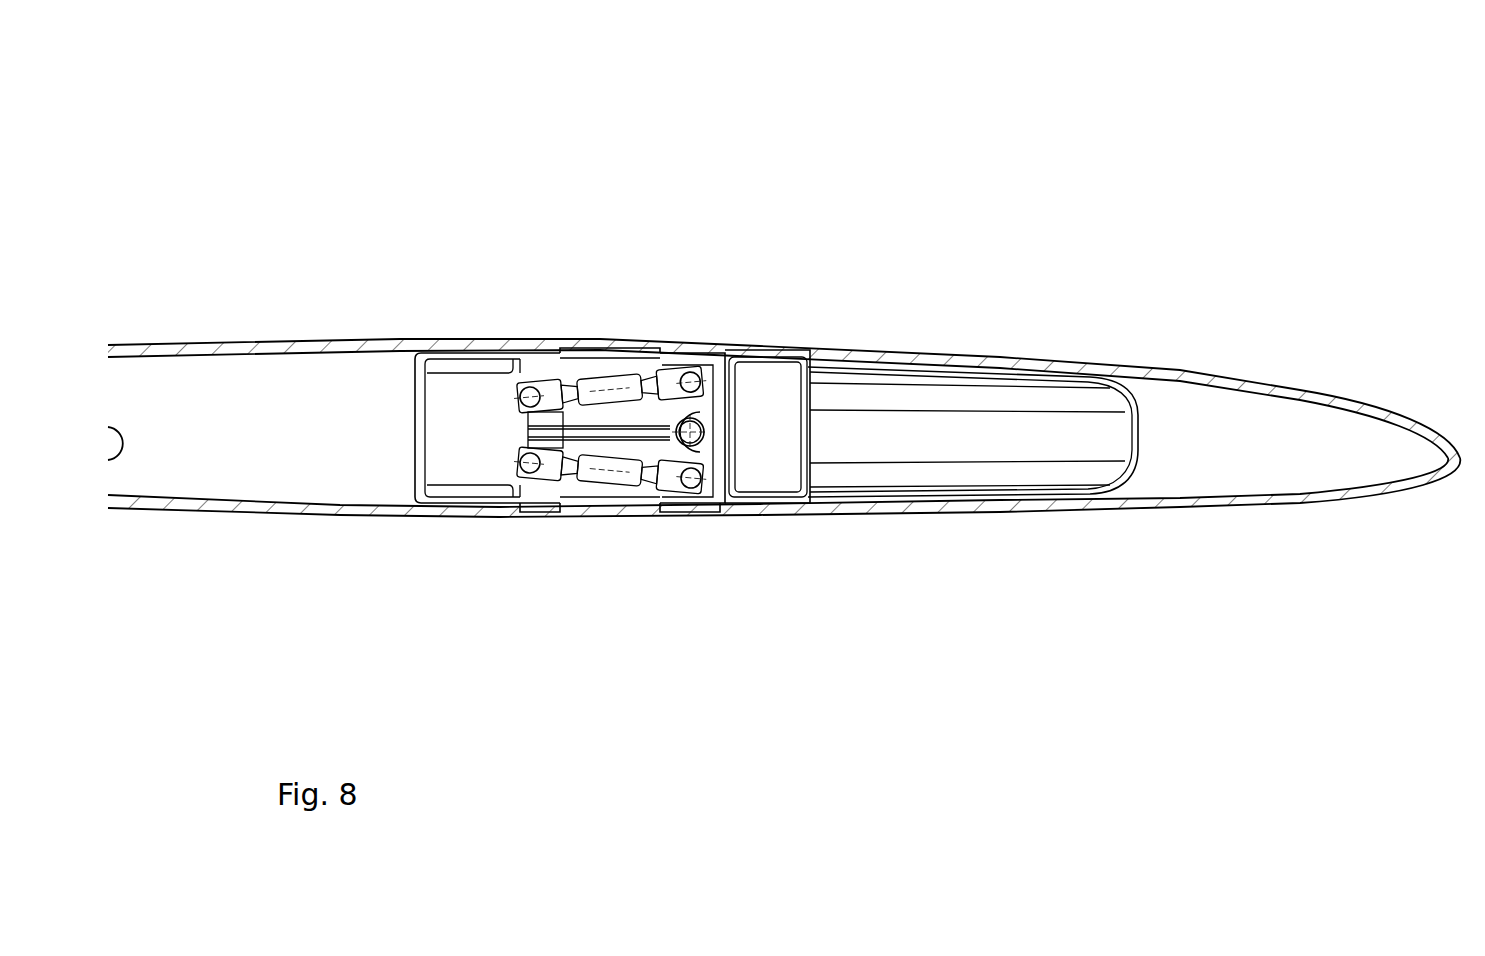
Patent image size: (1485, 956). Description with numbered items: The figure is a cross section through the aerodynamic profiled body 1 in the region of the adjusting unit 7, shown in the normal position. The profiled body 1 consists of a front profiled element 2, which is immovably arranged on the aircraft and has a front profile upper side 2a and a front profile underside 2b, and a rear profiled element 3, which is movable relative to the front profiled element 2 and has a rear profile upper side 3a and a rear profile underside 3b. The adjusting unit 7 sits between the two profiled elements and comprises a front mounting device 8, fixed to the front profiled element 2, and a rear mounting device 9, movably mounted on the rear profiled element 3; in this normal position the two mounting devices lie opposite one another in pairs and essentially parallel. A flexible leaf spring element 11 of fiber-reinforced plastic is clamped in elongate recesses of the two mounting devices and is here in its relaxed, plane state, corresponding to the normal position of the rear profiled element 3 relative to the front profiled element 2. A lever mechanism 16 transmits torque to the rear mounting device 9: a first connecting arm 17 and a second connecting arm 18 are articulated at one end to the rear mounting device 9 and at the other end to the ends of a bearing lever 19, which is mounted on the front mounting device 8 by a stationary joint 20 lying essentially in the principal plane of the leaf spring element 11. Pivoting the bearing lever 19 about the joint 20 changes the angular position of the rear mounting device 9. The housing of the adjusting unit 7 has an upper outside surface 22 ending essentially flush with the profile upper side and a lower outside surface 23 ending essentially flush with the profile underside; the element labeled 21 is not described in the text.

The profiled body 1 is at (1177, 153).
The front profiled element 2 is at (1210, 357).
The front profile upper side 2a is at (1063, 362).
The front profile underside 2b is at (1175, 503).
The rear profiled element 3 is at (219, 320).
The rear profile upper side 3a is at (293, 348).
The rear profile underside 3b is at (243, 508).
The adjusting unit 7 is at (578, 325).
The front mounting device 8 is at (692, 520).
The rear mounting device 9 is at (485, 498).
The leaf spring element 11 is at (568, 432).
The lever mechanism 16 is at (607, 357).
The first connecting arm 17 is at (602, 473).
The second connecting arm 18 is at (624, 395).
The bearing lever 19 is at (708, 476).
The joint 20 is at (690, 432).
The hollow support member 21 is at (642, 325).
The upper outside surface 22 is at (673, 345).
The lower outside surface 23 is at (540, 515).